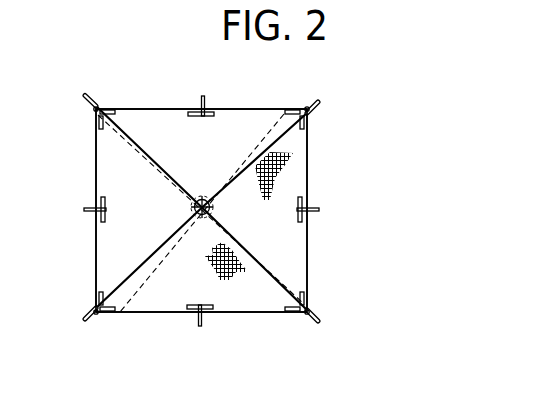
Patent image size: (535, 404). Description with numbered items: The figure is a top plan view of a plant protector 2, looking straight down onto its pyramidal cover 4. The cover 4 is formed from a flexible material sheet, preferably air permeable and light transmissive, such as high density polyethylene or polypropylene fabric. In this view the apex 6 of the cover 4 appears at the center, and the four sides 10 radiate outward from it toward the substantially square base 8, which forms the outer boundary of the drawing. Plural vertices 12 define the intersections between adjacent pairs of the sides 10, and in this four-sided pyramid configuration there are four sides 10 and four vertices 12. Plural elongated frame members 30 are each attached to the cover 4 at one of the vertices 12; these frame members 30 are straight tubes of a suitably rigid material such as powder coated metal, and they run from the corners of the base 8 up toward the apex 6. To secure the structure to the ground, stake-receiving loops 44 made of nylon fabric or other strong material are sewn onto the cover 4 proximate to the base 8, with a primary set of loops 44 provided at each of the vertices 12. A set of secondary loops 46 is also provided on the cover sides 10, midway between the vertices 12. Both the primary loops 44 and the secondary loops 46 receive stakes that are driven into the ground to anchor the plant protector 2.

The plant protector 2 is at (133, 95).
The cover 4 is at (210, 153).
The apex 6 is at (190, 209).
The base 8 is at (201, 210).
The sides 10 is at (202, 199).
The vertices 12 is at (210, 238).
The frame members 30 is at (209, 234).
The stake-receiving loops 44 is at (194, 211).
The secondary loops 46 is at (208, 221).